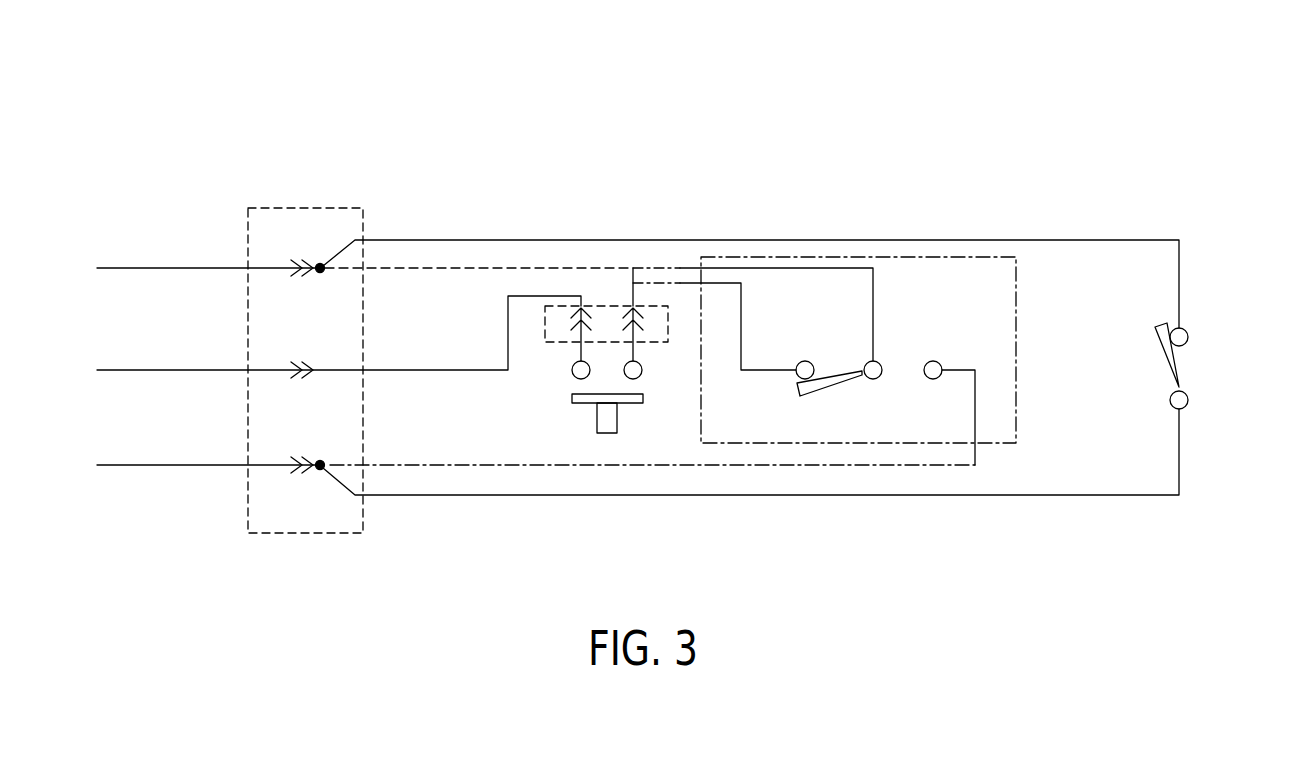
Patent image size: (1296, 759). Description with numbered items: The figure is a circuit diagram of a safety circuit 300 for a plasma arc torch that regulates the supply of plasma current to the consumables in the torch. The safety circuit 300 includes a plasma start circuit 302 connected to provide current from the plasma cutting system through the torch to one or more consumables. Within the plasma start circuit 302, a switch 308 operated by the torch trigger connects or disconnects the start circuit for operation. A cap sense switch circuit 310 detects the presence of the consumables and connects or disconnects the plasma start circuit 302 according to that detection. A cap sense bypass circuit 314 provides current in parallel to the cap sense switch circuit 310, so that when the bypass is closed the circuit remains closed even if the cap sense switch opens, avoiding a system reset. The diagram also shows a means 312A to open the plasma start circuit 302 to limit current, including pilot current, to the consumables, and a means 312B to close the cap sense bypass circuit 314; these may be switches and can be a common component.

The safety circuit 300 is at (191, 93).
The plasma start circuit 302 is at (421, 414).
The switch 308 is at (577, 420).
The cap sense switch circuit 310 is at (1190, 366).
The means to open the plasma start circuit 312A is at (801, 407).
The means to close the cap sense bypass circuit 312B is at (902, 380).
The cap sense bypass circuit 314 is at (666, 263).